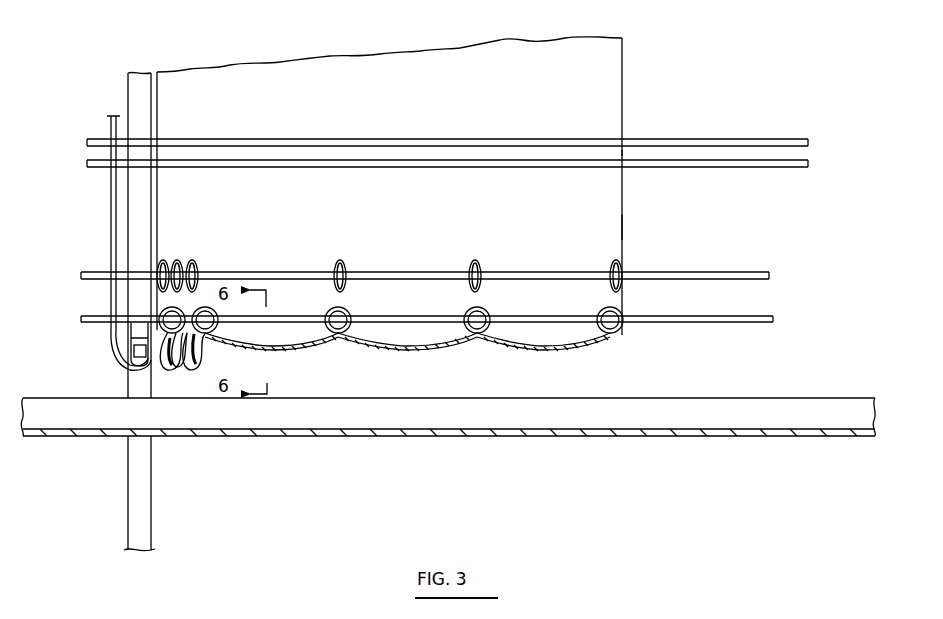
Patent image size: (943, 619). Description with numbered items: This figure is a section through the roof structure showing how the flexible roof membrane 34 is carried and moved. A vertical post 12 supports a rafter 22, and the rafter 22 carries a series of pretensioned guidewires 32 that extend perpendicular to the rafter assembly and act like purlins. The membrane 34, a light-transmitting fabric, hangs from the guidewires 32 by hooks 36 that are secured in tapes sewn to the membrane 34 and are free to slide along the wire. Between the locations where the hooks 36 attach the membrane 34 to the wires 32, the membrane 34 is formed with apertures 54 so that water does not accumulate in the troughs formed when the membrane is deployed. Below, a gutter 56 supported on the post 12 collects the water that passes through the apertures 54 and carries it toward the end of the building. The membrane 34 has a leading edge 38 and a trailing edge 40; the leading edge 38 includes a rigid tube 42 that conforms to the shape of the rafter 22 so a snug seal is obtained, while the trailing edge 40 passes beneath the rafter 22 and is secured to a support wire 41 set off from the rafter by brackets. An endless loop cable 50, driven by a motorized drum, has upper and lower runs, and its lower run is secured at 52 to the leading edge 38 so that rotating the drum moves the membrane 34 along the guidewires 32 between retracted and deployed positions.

The vertical post 12 is at (147, 510).
The rafter 22 is at (133, 100).
The guidewire 32 is at (712, 281).
The flexible roof membrane 34 is at (513, 363).
The hook 36 is at (468, 262).
The leading edge 38 is at (632, 226).
The trailing edge 40 is at (158, 212).
The support wire 41 is at (112, 183).
The rigid tube 42 is at (618, 333).
The endless loop cable 50 is at (756, 128).
The securement of cable to leading edge 52 is at (653, 177).
The aperture 54 is at (272, 344).
The gutter 56 is at (641, 422).